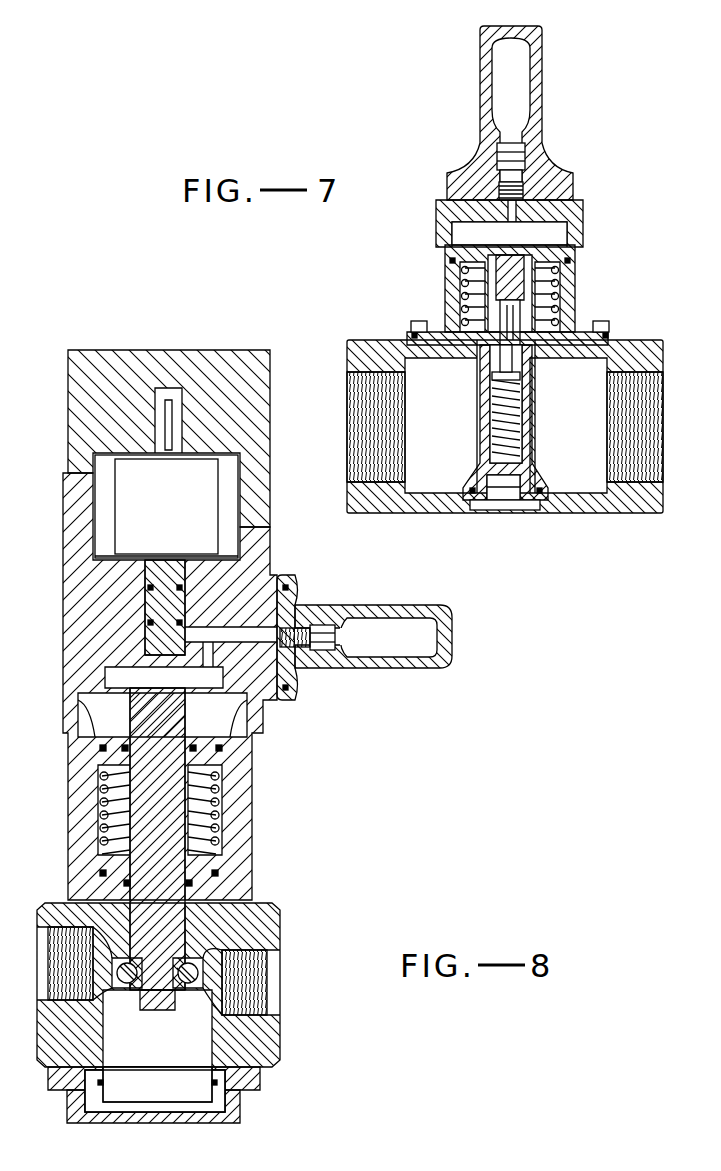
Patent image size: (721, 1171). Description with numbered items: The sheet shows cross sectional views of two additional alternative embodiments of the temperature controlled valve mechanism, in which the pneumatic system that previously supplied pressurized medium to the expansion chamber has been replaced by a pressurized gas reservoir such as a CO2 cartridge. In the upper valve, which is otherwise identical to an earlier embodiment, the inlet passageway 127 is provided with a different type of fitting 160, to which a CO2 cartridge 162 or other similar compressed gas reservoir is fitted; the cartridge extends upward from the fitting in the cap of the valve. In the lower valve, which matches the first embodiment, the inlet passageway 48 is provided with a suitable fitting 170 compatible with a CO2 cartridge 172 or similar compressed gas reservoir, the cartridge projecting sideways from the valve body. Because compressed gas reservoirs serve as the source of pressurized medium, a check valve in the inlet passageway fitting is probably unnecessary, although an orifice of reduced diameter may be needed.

In FIG. 7, the CO2 cartridge 162 is at (520, 100).
In FIG. 7, the fitting 160 is at (515, 180).
In FIG. 7, the inlet passageway 127 is at (513, 214).
In FIG. 8, the fitting 170 is at (283, 625).
In FIG. 8, the CO2 cartridge 172 is at (393, 637).
In FIG. 8, the inlet passageway 48 is at (260, 640).